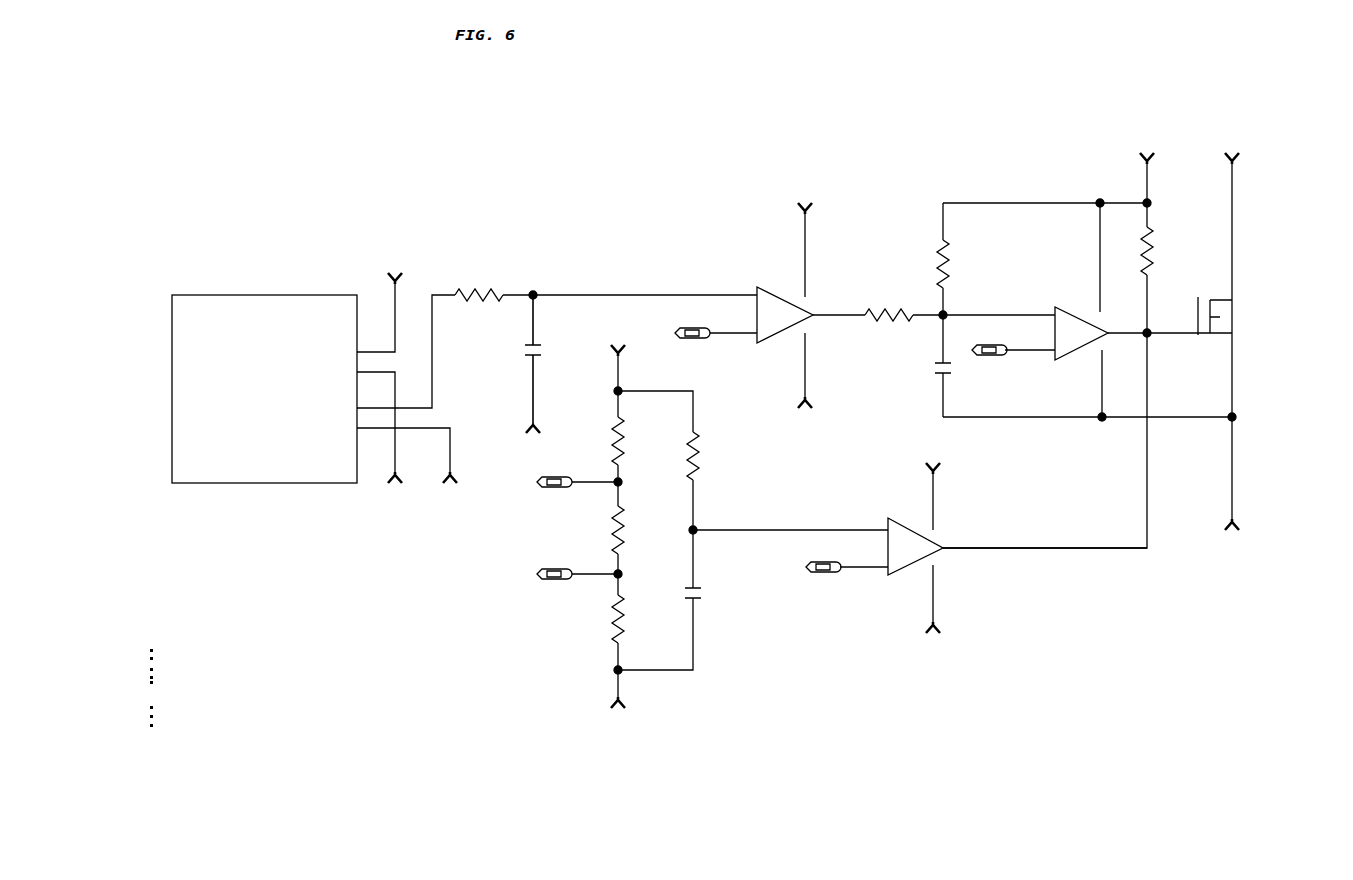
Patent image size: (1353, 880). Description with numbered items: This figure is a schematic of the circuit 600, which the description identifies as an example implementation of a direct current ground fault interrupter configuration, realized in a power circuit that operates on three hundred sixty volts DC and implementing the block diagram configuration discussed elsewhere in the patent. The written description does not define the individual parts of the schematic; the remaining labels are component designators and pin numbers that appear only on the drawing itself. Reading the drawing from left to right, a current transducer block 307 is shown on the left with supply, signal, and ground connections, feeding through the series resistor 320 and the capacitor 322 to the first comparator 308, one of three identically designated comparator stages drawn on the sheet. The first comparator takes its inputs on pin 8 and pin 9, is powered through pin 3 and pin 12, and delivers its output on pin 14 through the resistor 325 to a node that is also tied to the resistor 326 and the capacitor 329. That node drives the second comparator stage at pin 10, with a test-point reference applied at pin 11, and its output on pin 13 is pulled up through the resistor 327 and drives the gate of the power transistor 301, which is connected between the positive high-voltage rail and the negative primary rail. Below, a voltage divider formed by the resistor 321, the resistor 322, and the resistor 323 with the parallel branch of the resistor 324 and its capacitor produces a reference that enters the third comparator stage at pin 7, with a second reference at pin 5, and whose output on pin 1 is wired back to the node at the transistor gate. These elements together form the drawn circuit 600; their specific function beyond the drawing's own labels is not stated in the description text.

The circuit 600 is at (932, 106).
The current transducer M307 307 is at (256, 365).
The comparator M308 (LM339) 308 is at (765, 291).
The resistor R320 320 is at (480, 269).
The resistor R321 321 is at (638, 437).
The capacitor C322 322 is at (498, 364).
The resistor R323 323 is at (638, 619).
The resistor R324 324 is at (711, 459).
The resistor R325 325 is at (891, 295).
The resistor R326 326 is at (962, 259).
The resistor R327 327 is at (1167, 268).
The capacitor C329 329 is at (920, 366).
The MOSFET Q301 301 is at (1268, 317).
The comparator output pin 1 is at (1045, 539).
The comparator supply pin 3 is at (798, 250).
The comparator input pin 5 is at (864, 559).
The comparator input pin 7 is at (790, 520).
The comparator input pin 8 is at (630, 286).
The comparator input pin 9 is at (733, 324).
The comparator input pin 10 is at (984, 306).
The comparator input pin 11 is at (1030, 343).
The comparator ground pin 12 is at (798, 370).
The comparator output pin 13 is at (1153, 324).
The comparator output pin 14 is at (839, 307).